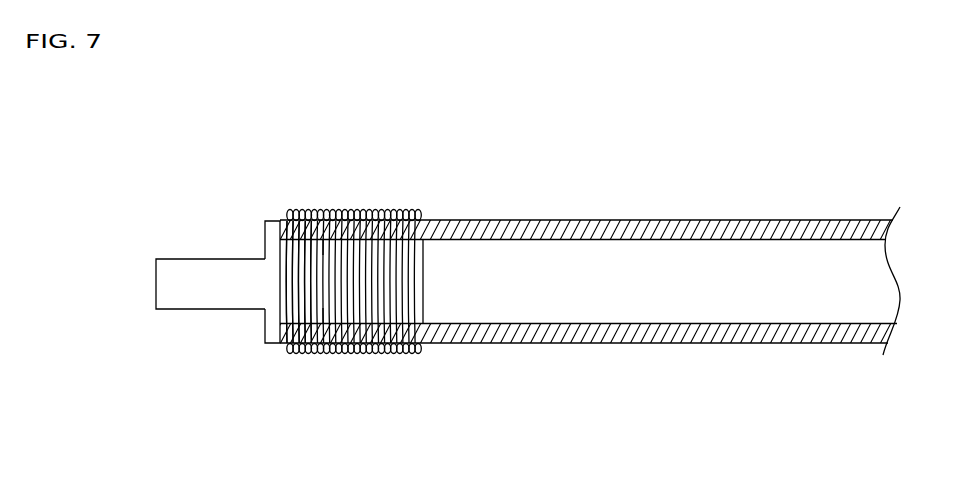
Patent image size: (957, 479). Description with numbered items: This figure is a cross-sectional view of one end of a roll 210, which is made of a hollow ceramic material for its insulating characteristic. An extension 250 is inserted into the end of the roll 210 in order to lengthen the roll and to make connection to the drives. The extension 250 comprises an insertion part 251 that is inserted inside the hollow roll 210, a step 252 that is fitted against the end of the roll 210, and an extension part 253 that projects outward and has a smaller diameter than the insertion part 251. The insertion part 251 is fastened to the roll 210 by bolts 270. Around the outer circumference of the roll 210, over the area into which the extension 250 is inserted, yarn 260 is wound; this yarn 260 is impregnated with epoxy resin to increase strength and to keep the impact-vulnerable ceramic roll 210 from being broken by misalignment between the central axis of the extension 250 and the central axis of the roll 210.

The roll 210 is at (650, 203).
The extension 250 is at (292, 318).
The insertion part 251 is at (412, 310).
The step 252 is at (280, 343).
The extension part 253 is at (197, 297).
The yarn 260 is at (393, 208).
The bolt 270 is at (308, 208).